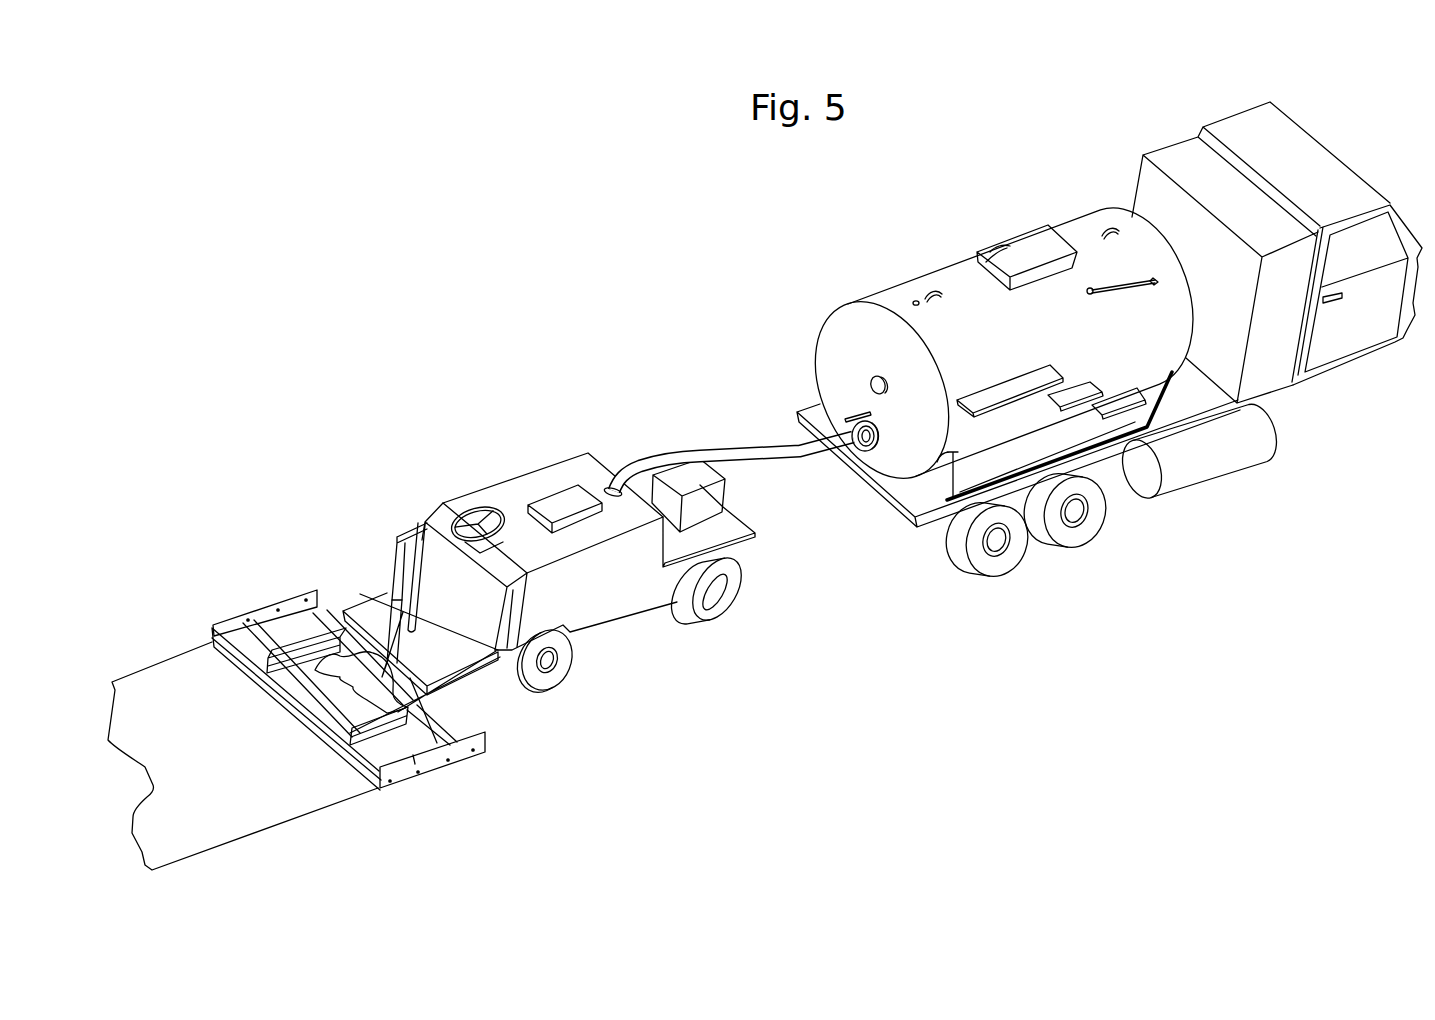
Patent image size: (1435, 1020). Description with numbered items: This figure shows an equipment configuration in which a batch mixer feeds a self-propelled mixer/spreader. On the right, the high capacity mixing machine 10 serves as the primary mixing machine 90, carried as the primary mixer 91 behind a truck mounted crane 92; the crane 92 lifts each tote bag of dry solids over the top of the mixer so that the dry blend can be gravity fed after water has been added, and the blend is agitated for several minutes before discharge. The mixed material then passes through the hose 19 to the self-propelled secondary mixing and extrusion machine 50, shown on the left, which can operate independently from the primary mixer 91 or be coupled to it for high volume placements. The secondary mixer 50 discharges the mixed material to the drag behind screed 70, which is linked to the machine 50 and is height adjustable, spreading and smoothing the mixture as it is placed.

The high capacity mixing machine 10 is at (877, 355).
The hose 19 is at (726, 446).
The secondary mixing and extrusion machine 50 is at (530, 436).
The drag behind screed 70 is at (432, 794).
The self propelled primary mixing machine 90 is at (1015, 202).
The primary mixer 91 is at (1093, 584).
The truck mounted crane 92 is at (1179, 152).